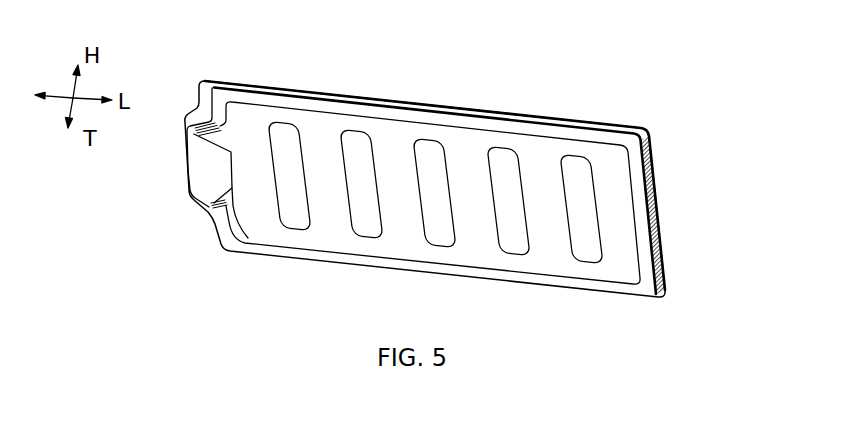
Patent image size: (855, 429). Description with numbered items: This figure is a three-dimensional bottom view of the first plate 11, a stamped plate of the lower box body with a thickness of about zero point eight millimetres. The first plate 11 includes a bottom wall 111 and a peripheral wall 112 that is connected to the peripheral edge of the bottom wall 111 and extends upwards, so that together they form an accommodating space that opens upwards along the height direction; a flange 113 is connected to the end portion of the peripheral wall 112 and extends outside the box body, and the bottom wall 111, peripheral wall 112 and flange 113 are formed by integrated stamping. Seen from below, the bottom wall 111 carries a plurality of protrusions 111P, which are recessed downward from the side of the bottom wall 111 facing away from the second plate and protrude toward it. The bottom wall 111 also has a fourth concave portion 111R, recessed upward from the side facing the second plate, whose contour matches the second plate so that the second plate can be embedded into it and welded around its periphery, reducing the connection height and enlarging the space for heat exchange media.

The first plate 11 is at (215, 38).
The bottom wall 111 is at (641, 197).
The protrusion 111P is at (362, 223).
The fourth concave portion 111R is at (620, 236).
The peripheral wall 112 is at (651, 162).
The flange 113 is at (650, 140).